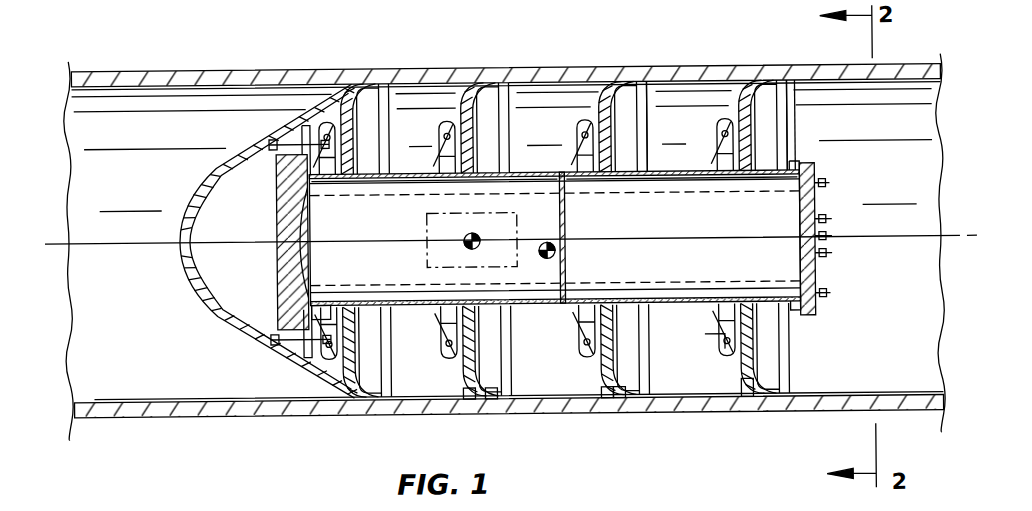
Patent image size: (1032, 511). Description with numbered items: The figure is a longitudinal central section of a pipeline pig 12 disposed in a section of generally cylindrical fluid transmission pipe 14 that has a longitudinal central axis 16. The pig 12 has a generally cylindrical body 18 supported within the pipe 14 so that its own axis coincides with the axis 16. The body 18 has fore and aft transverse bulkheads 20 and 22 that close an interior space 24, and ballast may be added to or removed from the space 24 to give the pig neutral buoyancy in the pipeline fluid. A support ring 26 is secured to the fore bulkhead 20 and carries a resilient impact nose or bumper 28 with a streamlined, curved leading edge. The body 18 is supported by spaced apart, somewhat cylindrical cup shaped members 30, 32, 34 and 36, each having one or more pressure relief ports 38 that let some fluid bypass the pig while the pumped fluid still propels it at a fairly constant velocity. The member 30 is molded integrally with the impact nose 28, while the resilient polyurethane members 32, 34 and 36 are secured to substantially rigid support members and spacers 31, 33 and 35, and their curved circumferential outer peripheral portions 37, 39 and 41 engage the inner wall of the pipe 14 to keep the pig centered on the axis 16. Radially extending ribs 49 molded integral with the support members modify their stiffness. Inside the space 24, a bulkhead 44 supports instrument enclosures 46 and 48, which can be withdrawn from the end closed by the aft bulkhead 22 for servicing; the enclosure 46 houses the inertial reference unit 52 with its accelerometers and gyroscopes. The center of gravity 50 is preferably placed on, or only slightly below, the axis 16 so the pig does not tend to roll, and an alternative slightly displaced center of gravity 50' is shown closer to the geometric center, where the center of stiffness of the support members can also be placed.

The pipeline pig 12 is at (541, 126).
The fluid transmission pipe 14 is at (303, 72).
The longitudinal central axis 16 is at (888, 242).
The body 18 is at (770, 172).
The fore transverse bulkhead 20 is at (314, 270).
The aft transverse bulkhead 22 is at (816, 207).
The interior space 24 is at (355, 312).
The support ring 26 is at (278, 258).
The impact nose 28 is at (212, 320).
The cup shaped member 30 is at (356, 80).
The support member and spacer 31 is at (438, 343).
The cup shaped member 32 is at (468, 84).
The support member and spacer 33 is at (575, 342).
The cup shaped member 34 is at (603, 84).
The support member and spacer 35 is at (708, 342).
The cup shaped member 36 is at (740, 84).
The circumferential outer peripheral portion 37 is at (490, 405).
The pressure relief port 38 is at (344, 378).
The circumferential outer peripheral portion 39 is at (616, 398).
The circumferential outer peripheral portion 41 is at (746, 385).
The bulkhead 44 is at (575, 190).
The instrument enclosure 46 is at (400, 194).
The instrument enclosure 48 is at (700, 190).
The rib 49 is at (650, 105).
The center of gravity 50 is at (508, 229).
The center of gravity 50' is at (582, 256).
The inertial reference unit 52 is at (424, 255).